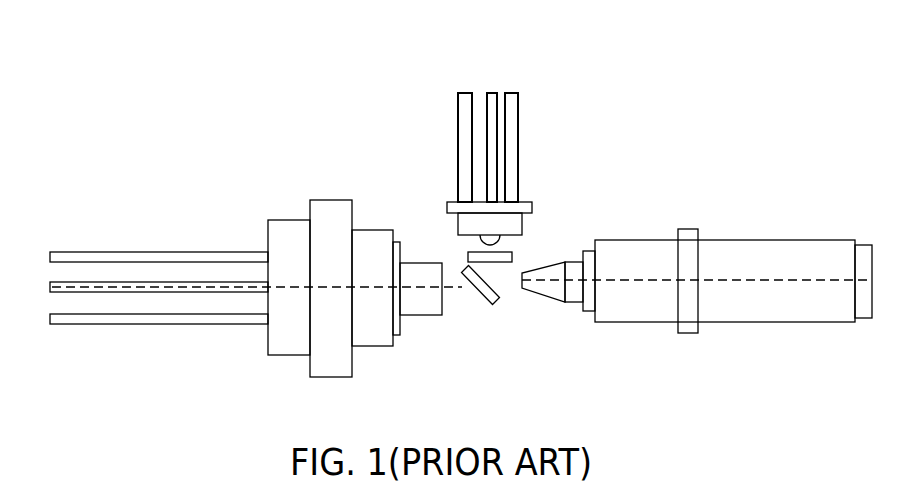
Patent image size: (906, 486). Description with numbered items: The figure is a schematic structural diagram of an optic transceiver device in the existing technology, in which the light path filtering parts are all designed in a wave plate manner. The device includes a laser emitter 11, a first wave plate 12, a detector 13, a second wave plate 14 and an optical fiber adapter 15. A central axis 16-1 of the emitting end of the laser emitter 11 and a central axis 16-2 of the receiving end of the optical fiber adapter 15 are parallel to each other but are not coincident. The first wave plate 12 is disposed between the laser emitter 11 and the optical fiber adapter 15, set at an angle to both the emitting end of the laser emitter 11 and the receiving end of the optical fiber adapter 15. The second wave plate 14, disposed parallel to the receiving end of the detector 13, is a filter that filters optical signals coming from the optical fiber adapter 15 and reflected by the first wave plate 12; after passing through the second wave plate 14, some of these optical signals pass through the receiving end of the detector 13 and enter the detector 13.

The laser emitter 11 is at (246, 199).
The first wave plate 12 is at (386, 162).
The detector 13 is at (473, 132).
The second wave plate 14 is at (586, 141).
The optical fiber adapter 15 is at (697, 176).
The central axis of emitting end of laser emitter 16-1 is at (226, 290).
The central axis of receiving end of optical fiber adapter 16-2 is at (733, 284).